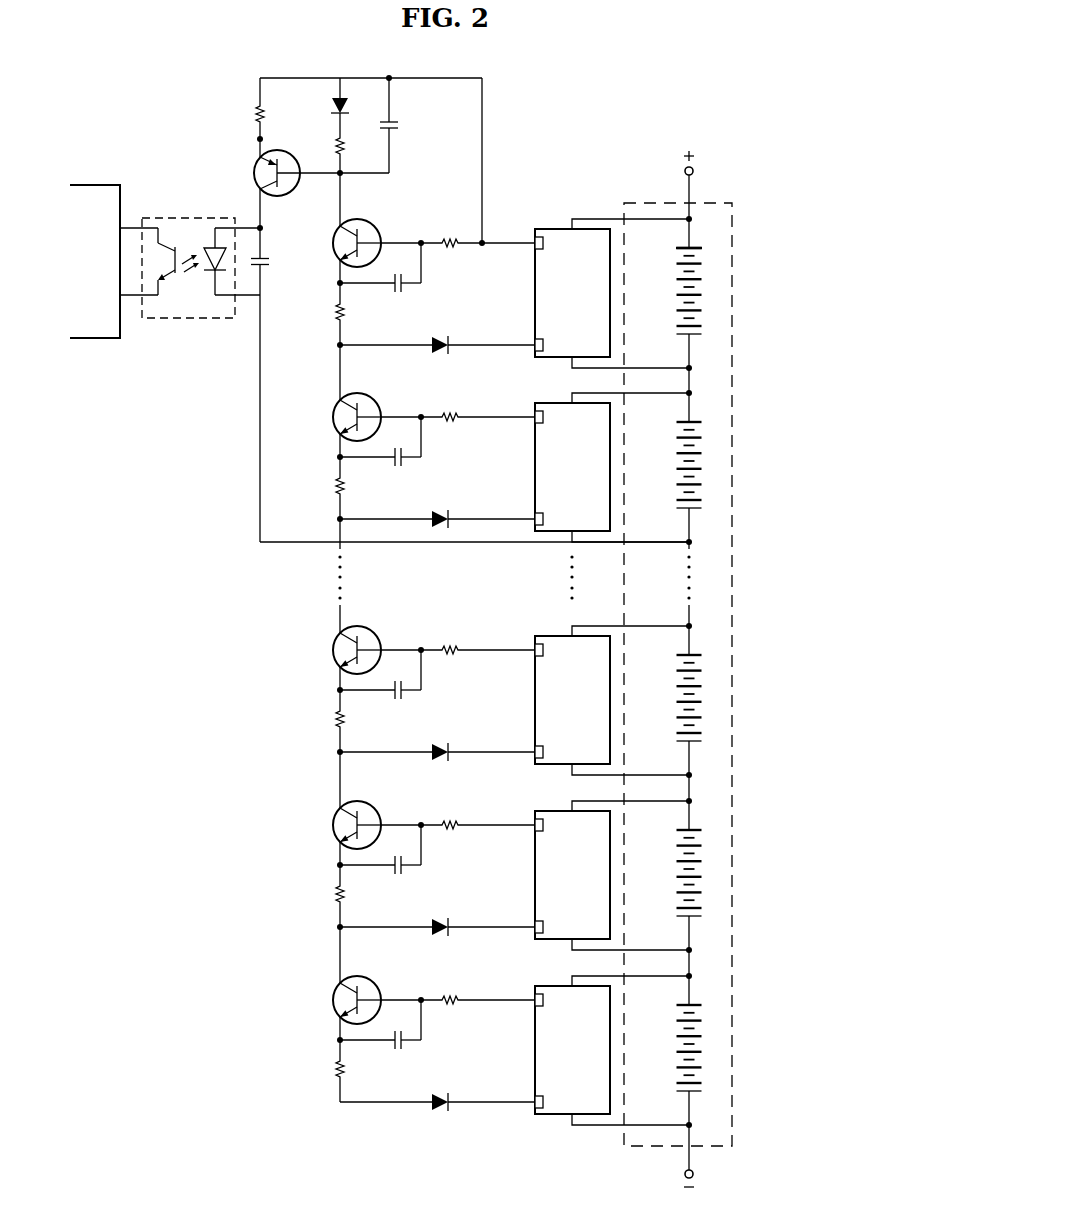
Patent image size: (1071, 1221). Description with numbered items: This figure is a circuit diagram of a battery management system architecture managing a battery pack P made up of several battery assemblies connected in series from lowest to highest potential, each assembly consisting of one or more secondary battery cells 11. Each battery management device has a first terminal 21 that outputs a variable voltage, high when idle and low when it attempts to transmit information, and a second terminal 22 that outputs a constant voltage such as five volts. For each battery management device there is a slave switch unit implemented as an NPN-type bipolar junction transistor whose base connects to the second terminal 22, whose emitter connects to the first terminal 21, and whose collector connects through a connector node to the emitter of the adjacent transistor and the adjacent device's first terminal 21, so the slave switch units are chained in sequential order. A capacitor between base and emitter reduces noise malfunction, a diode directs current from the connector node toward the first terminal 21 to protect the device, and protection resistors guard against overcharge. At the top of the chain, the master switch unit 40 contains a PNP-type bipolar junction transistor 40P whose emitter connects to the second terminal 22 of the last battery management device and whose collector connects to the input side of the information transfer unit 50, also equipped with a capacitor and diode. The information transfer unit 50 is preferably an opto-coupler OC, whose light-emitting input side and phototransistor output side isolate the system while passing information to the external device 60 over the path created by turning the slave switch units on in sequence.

The secondary battery cell 11 is at (699, 247).
The first terminal 21 is at (544, 345).
The second terminal 22 is at (544, 243).
The master switch unit 40 is at (340, 160).
The PNP-type bipolar junction transistor 40P is at (254, 175).
The information transfer unit 50 is at (190, 237).
The opto-coupler OC is at (196, 218).
The external device 60 is at (101, 185).
The battery pack P is at (634, 203).